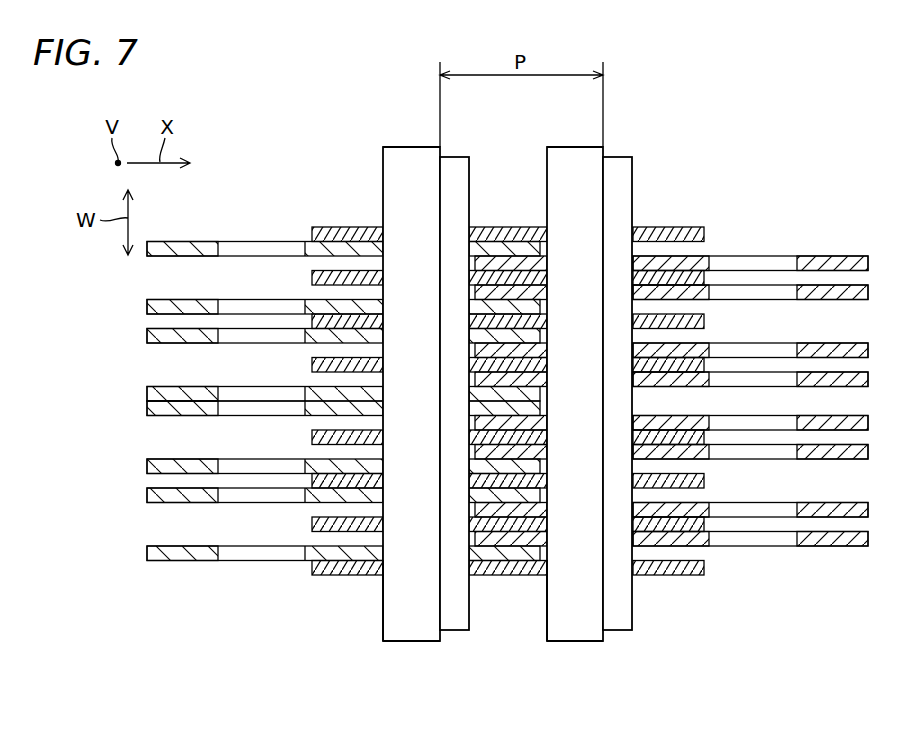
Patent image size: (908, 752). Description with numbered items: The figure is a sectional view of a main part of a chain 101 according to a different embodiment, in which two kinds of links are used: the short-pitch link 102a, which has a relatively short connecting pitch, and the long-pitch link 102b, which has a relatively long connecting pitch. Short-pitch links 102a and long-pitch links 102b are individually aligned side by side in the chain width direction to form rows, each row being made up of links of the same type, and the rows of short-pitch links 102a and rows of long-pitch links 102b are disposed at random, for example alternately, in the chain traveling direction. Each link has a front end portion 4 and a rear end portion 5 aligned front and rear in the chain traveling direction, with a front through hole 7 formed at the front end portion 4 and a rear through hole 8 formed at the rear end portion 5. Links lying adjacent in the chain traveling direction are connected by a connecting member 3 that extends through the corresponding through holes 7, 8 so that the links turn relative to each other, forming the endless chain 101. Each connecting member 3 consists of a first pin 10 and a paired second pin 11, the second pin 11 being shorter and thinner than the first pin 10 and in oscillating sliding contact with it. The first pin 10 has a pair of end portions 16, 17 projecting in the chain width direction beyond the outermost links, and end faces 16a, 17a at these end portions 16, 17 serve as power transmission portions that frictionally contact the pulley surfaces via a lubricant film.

The chain 101 is at (750, 168).
The connecting member 3 is at (512, 442).
The front end portion 4 is at (525, 498).
The rear end portion 5 is at (187, 556).
The front through hole 7 is at (383, 466).
The rear through hole 8 is at (383, 481).
The first pin 10 is at (477, 688).
The second pin 11 is at (457, 615).
The end portion 16 is at (383, 175).
The end face 16a is at (410, 147).
The end portion 17 is at (383, 622).
The end face 17a is at (400, 641).
The short-pitch link 102a is at (147, 554).
The long-pitch link 102b is at (704, 565).